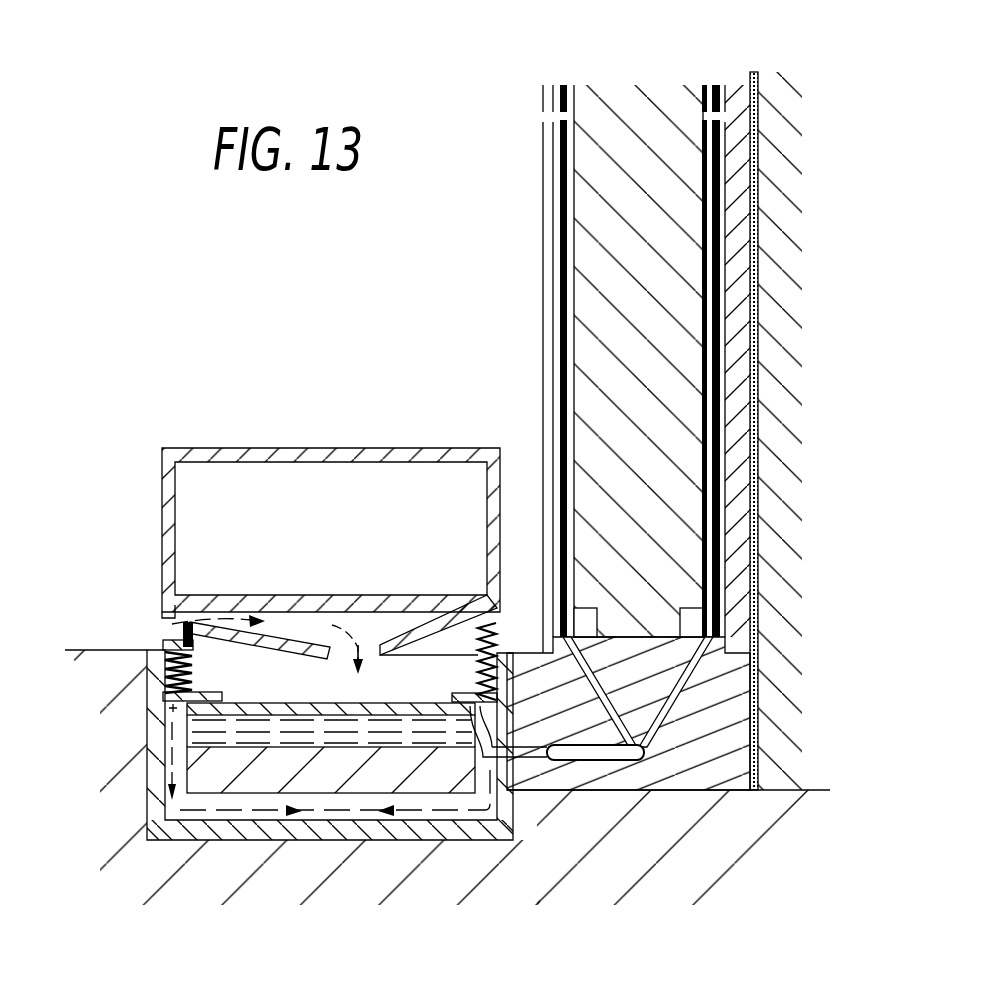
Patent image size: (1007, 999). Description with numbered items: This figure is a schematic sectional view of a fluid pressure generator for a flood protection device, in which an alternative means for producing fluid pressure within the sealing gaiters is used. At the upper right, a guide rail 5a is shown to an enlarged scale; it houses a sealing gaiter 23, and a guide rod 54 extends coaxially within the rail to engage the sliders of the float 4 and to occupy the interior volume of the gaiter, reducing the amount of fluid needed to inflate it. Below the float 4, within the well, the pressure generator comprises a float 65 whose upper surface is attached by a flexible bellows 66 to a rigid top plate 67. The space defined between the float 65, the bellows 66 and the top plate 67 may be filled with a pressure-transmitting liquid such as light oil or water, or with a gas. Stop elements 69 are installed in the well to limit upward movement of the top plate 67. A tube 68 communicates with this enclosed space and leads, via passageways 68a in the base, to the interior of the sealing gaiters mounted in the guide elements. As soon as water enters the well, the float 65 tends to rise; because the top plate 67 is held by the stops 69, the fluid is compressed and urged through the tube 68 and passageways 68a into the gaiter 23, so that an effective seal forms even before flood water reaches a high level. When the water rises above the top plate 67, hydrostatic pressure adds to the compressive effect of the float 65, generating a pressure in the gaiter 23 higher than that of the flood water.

The float 4 is at (363, 452).
The guide rail 5a is at (816, 115).
The sealing gaiter 23 is at (718, 372).
The guide rod 54 is at (628, 290).
The float 65 is at (333, 765).
The flexible bellows 66 is at (165, 732).
The top plate 67 is at (311, 701).
The tube 68 is at (526, 753).
The passageways 68a is at (697, 663).
The stop elements 69 is at (468, 692).